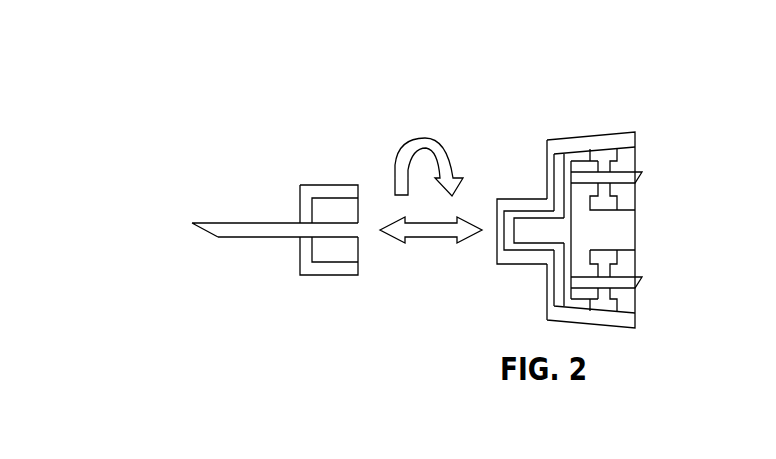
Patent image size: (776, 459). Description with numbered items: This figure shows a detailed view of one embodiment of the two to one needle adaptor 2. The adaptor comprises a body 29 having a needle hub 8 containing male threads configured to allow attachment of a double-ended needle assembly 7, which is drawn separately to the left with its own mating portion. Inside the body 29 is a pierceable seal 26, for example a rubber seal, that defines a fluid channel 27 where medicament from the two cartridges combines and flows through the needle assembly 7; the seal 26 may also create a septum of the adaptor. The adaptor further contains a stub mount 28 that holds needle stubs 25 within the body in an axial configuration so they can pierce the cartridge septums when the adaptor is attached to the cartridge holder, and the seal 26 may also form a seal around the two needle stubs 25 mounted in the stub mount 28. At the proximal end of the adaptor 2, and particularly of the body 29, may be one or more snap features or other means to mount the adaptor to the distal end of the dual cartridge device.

The 2 to 1 needle adaptor 2 is at (602, 180).
The double-ended needle assembly 7 is at (313, 275).
The needle hub 8 is at (348, 262).
The needle stubs 25 is at (639, 181).
The pierceable seal 26 is at (507, 213).
The fluid channel 27 is at (540, 222).
The stub mount 28 is at (586, 151).
The body 29 is at (560, 138).